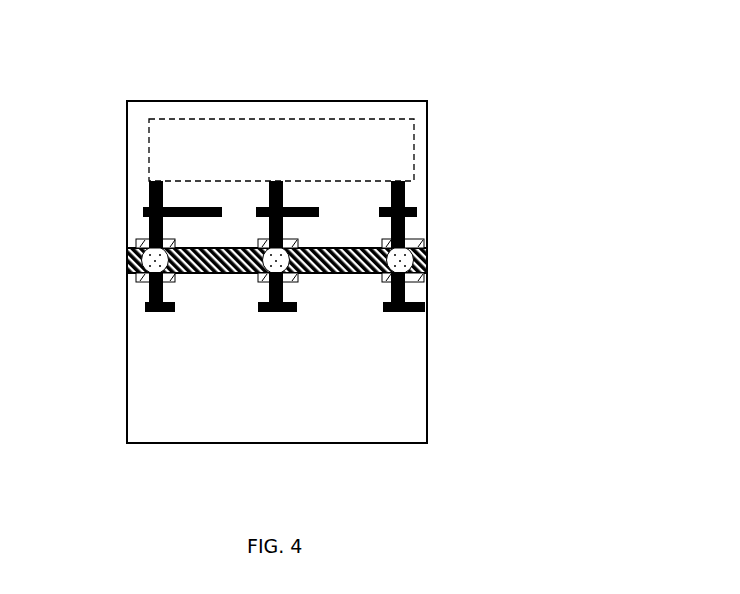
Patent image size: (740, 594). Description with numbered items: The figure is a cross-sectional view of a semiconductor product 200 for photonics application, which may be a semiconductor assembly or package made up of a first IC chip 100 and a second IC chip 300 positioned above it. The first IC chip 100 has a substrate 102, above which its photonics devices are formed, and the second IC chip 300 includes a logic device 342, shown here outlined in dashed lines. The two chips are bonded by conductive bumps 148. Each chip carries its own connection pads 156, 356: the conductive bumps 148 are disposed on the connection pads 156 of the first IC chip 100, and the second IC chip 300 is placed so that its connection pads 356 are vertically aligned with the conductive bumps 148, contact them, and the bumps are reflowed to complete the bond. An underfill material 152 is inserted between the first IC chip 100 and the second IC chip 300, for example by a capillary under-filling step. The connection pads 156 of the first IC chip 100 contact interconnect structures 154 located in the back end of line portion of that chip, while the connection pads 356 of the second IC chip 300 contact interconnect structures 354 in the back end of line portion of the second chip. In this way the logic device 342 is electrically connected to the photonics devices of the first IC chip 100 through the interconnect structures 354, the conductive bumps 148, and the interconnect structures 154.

The first IC chip 100 is at (463, 383).
The semiconductor product 200 is at (622, 110).
The second IC chip 300 is at (458, 125).
The substrate 102 is at (226, 427).
The conductive bumps 148 is at (130, 260).
The underfill material 152 is at (200, 274).
The interconnect structures 154 is at (150, 312).
The connection pads 156 is at (137, 282).
The logic device 342 is at (213, 118).
The interconnect structures 354 is at (143, 213).
The connection pads 356 is at (137, 243).